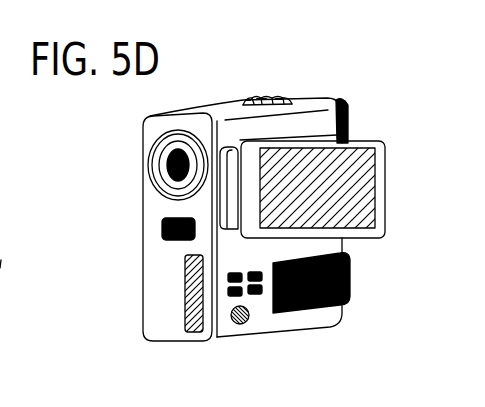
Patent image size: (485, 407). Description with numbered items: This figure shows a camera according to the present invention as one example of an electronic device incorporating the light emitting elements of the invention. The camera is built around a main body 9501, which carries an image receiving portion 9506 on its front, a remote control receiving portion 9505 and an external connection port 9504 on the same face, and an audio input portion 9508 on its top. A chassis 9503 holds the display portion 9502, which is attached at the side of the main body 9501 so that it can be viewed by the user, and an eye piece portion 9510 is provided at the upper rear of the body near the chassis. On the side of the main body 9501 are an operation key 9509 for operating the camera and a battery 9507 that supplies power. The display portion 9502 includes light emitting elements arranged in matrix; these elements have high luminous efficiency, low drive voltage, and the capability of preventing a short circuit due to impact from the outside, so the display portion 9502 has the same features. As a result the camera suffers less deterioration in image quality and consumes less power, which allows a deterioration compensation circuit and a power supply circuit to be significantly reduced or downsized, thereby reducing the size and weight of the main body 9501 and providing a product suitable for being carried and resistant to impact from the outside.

The main body 9501 is at (168, 262).
The display portion 9502 is at (338, 218).
The chassis 9503 is at (378, 195).
The external connection port 9504 is at (190, 292).
The remote control receiving portion 9505 is at (162, 225).
The image receiving portion 9506 is at (168, 167).
The battery 9507 is at (352, 292).
The audio input portion 9508 is at (255, 94).
The operation key 9509 is at (263, 293).
The eye piece portion 9510 is at (353, 128).